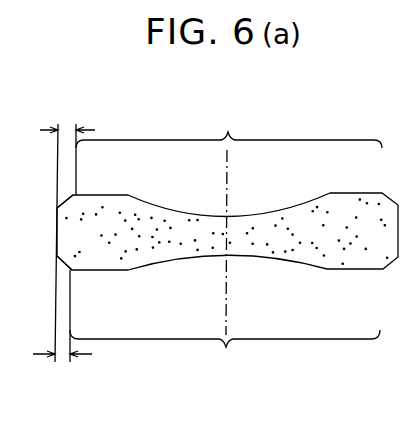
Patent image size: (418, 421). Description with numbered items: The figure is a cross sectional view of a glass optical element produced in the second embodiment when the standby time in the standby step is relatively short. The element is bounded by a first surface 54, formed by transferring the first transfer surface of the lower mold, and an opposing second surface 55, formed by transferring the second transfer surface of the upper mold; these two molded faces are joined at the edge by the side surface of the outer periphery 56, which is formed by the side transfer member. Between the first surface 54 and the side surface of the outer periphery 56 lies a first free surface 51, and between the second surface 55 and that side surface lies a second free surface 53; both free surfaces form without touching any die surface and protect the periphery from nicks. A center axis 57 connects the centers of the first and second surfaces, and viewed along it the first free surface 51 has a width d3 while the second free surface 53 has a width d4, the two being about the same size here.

The first free surface 51 is at (61, 266).
The second free surface 53 is at (73, 196).
The first surface 54 is at (225, 353).
The second surface 55 is at (229, 128).
The side surface of the outer periphery 56 is at (57, 245).
The center axis 57 is at (226, 168).
The width of the first free surface d3 is at (62, 327).
The width of the second free surface d4 is at (67, 230).